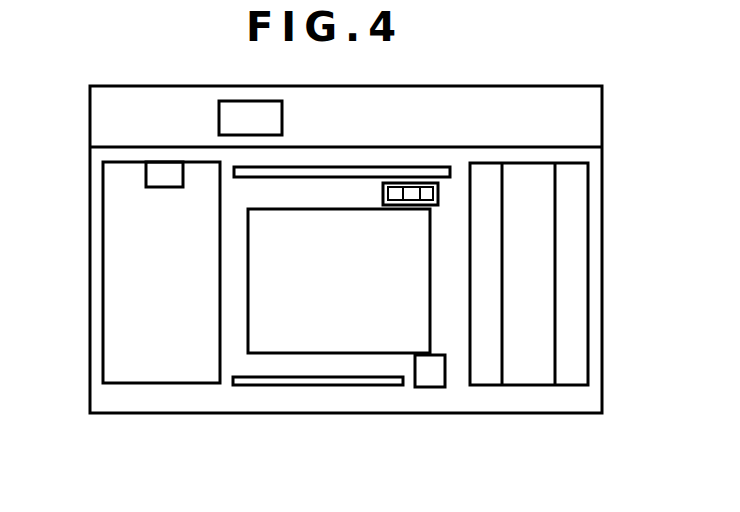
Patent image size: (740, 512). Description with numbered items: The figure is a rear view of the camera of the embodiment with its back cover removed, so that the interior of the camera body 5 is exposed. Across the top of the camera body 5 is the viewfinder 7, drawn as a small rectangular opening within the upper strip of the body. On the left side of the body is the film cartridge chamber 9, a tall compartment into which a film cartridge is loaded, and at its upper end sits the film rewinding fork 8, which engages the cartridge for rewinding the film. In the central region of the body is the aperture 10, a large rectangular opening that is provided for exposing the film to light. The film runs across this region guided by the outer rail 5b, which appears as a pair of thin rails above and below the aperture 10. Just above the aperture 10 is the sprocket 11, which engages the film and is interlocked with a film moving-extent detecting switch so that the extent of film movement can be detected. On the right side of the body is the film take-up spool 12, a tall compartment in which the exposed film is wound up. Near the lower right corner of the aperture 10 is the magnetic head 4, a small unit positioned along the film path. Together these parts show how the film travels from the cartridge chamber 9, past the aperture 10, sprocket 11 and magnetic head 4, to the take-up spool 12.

The magnetic head 4 is at (430, 375).
The camera body 5 is at (564, 113).
The outer rail 5b is at (287, 386).
The viewfinder 7 is at (226, 115).
The film rewinding fork 8 is at (149, 175).
The film cartridge chamber 9 is at (133, 301).
The aperture 10 is at (368, 330).
The sprocket 11 is at (417, 185).
The film take-up spool 12 is at (533, 322).